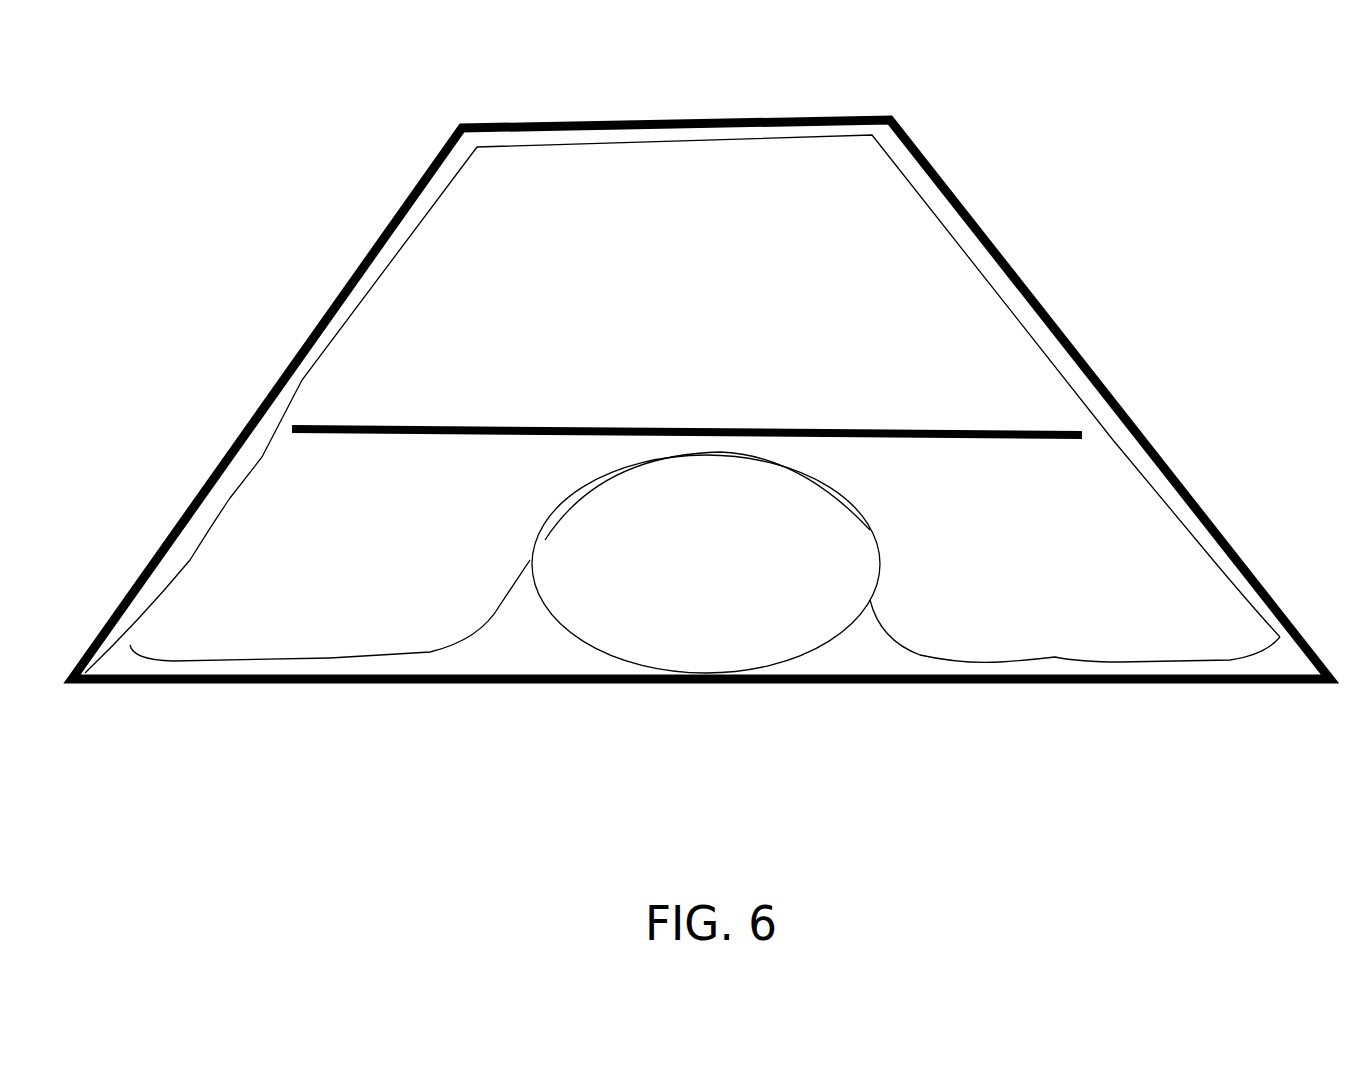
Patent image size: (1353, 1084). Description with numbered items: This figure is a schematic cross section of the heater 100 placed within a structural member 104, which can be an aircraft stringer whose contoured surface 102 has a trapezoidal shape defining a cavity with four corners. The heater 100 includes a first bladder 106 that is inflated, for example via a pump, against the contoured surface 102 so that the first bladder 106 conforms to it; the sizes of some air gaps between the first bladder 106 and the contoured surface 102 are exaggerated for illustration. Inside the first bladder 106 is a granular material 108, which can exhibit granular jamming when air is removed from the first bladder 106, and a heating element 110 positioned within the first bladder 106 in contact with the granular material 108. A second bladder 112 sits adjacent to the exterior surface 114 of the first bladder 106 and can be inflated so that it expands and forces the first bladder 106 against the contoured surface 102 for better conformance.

The heater 100 is at (953, 283).
The contoured surface 102 is at (88, 672).
The structural member 104 is at (462, 127).
The first bladder 106 is at (335, 657).
The granular material 108 is at (1047, 519).
The heating element 110 is at (730, 430).
The second bladder 112 is at (550, 613).
The exterior surface 114 is at (491, 655).